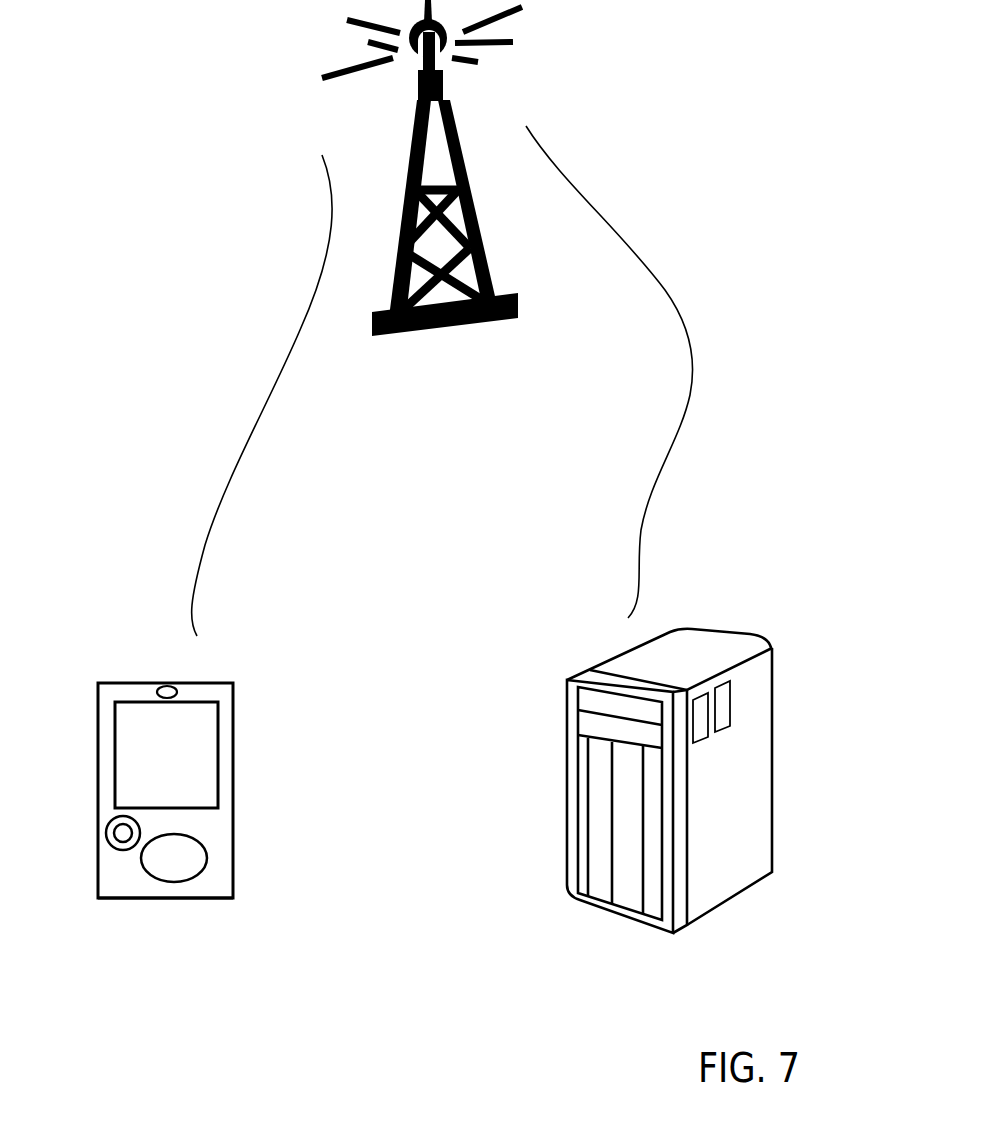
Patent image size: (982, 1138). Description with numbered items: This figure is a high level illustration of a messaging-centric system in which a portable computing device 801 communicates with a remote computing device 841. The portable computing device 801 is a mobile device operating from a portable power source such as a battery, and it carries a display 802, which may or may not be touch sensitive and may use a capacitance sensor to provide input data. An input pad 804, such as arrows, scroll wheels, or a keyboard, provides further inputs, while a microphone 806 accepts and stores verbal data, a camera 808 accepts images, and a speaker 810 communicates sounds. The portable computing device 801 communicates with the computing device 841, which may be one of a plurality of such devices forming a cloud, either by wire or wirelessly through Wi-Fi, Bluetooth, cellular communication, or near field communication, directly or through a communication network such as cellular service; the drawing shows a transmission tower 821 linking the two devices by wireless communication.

The cellular tower / wireless network 821 is at (330, 23).
The portable computing device 801 is at (130, 678).
The camera 808 is at (173, 690).
The display 802 is at (215, 795).
The input pad 804 is at (188, 873).
The microphone 806 is at (180, 898).
The speaker 810 is at (115, 840).
The computing device 841 is at (690, 655).